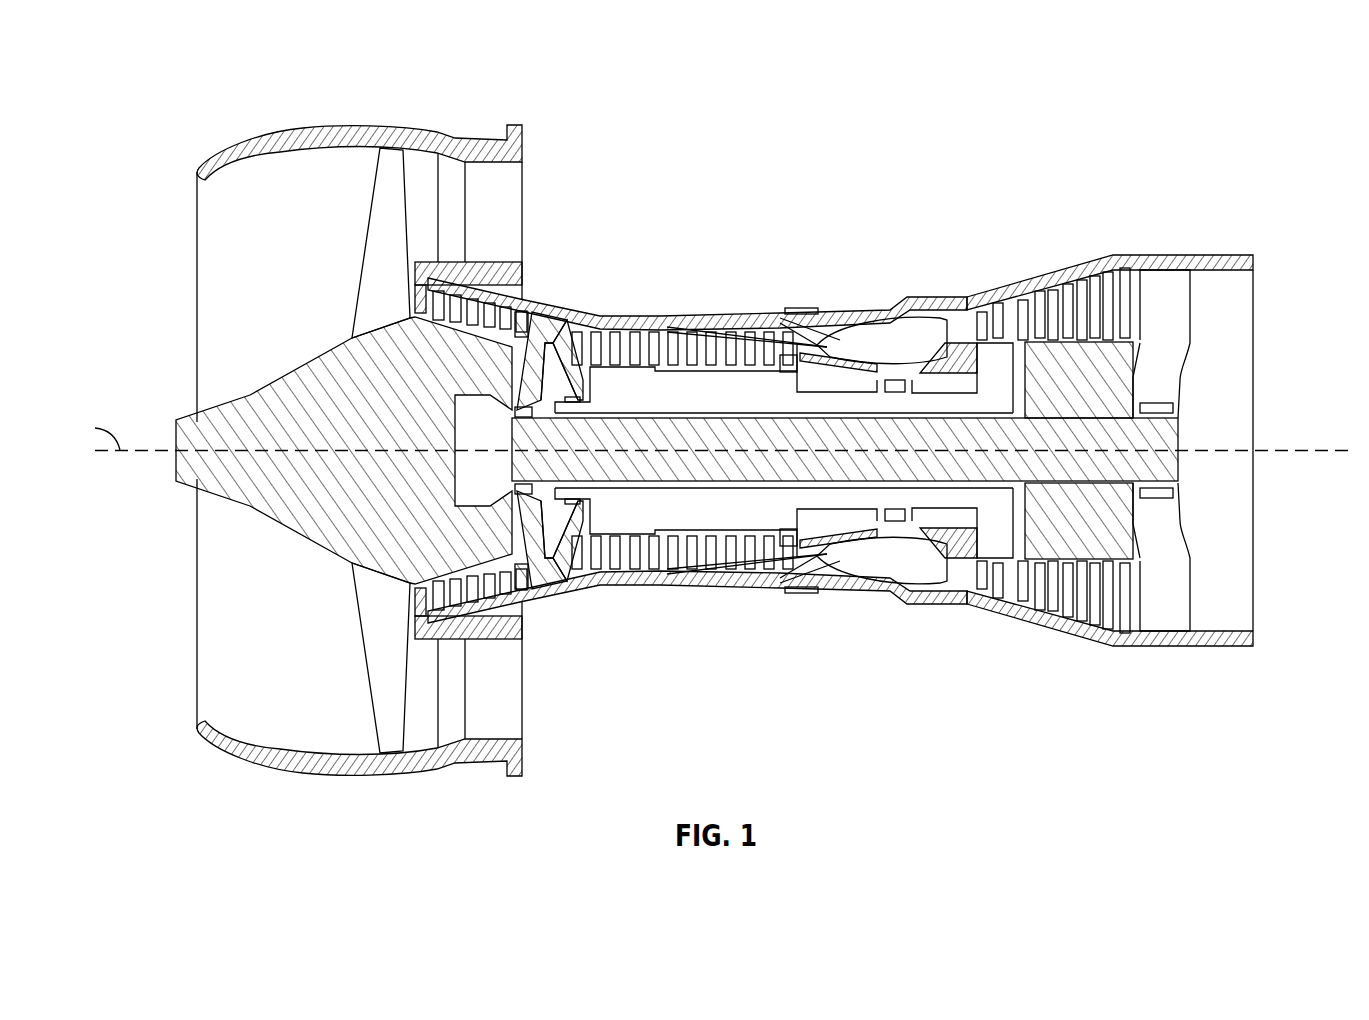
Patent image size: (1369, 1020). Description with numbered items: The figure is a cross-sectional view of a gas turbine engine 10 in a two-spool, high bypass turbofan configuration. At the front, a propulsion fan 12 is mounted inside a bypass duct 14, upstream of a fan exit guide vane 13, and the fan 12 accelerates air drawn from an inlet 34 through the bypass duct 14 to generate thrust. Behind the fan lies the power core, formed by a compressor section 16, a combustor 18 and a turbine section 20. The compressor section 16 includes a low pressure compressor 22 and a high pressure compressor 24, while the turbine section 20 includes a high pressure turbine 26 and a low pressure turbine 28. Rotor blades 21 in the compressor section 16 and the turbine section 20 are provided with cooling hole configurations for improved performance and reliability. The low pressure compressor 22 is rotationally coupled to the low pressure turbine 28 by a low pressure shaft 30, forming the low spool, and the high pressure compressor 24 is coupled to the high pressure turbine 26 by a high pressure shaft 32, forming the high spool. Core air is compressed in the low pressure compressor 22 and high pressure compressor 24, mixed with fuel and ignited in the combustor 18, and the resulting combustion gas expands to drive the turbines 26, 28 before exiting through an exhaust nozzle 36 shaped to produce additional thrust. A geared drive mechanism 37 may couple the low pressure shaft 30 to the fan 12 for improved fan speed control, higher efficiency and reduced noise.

The gas turbine engine 10 is at (703, 426).
The propulsion fan 12 is at (365, 250).
The fan exit guide vane 13 is at (455, 170).
The bypass duct 14 is at (510, 217).
The compressor section 16 is at (691, 490).
The combustor 18 is at (890, 340).
The turbine section 20 is at (1094, 508).
The rotor blades 21 is at (790, 335).
The low pressure compressor 22 is at (515, 603).
The high pressure compressor 24 is at (417, 650).
The high pressure turbine 26 is at (990, 602).
The low pressure turbine 28 is at (1110, 481).
The low pressure shaft 30 is at (905, 470).
The high pressure shaft 32 is at (833, 493).
The inlet 34 is at (212, 258).
The exhaust nozzle 36 is at (1243, 377).
The geared drive mechanism 37 is at (468, 476).